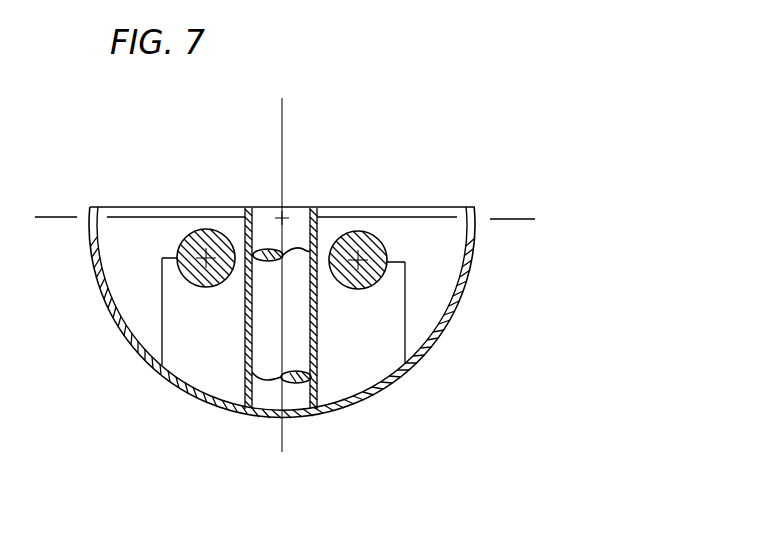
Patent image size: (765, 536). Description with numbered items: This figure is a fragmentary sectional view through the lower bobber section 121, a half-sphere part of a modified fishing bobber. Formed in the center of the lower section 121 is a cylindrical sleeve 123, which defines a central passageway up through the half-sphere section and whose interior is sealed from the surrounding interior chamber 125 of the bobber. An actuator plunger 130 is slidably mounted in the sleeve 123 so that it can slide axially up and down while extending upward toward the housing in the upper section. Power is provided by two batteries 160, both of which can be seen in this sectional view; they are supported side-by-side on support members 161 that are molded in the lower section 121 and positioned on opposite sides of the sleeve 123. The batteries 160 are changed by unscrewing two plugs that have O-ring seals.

The lower bobber section 121 is at (468, 280).
The interior chamber 125 is at (126, 224).
The cylindrical sleeve 123 is at (320, 357).
The actuator plunger 130 is at (270, 345).
The support members 161 is at (195, 350).
The batteries 160 is at (188, 237).